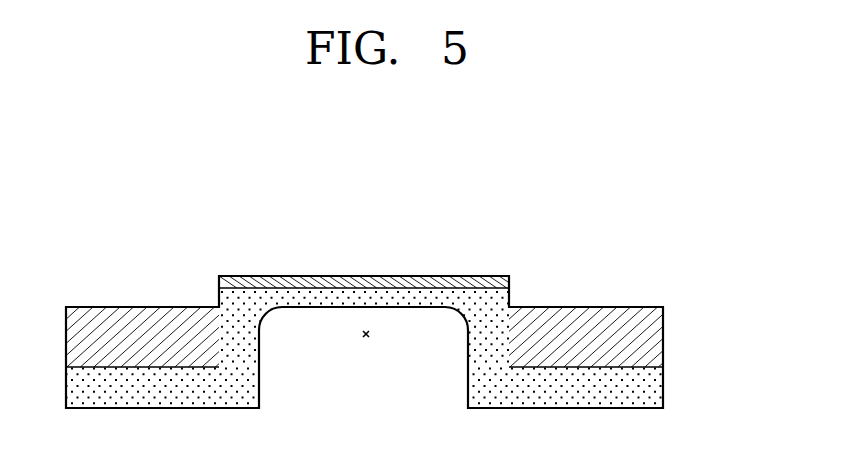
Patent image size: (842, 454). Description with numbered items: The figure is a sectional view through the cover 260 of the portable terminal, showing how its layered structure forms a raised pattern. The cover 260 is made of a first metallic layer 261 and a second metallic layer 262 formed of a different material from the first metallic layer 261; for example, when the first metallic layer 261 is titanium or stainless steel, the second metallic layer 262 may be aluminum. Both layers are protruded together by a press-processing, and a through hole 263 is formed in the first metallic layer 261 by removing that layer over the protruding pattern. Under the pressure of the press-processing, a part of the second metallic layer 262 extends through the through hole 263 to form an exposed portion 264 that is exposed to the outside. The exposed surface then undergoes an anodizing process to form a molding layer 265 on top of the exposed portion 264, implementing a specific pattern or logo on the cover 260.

The cover 260 is at (680, 273).
The first metallic layer 261 is at (657, 334).
The second metallic layer 262 is at (657, 388).
The through hole 263 is at (366, 331).
The exposed portion 264 is at (434, 295).
The molding layer 265 is at (305, 282).